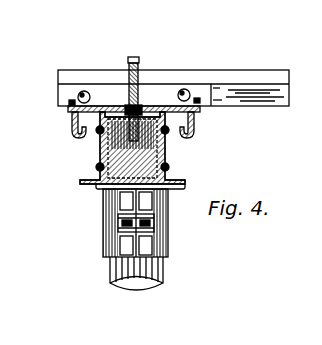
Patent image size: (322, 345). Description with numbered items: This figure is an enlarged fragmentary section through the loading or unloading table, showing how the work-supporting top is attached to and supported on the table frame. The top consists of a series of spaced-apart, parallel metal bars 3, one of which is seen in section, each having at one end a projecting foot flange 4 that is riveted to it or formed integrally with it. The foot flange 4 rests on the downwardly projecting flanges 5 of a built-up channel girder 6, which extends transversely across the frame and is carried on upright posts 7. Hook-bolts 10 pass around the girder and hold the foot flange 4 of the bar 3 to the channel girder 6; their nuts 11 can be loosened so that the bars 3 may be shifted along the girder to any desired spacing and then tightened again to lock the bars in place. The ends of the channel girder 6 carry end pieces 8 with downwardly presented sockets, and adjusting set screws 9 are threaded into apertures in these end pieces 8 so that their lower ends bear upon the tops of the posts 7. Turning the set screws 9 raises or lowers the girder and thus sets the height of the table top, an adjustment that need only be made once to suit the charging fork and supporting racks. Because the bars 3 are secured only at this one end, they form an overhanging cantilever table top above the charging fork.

The metal bar 3 is at (276, 78).
The foot flange 4 is at (62, 108).
The downwardly projecting flange 5 is at (82, 136).
The channel girder 6 is at (99, 157).
The upright post 7 is at (111, 270).
The end piece 8 is at (104, 202).
The adjusting set screw 9 is at (135, 57).
The hook-bolt 10 is at (72, 126).
The nut 11 is at (67, 101).